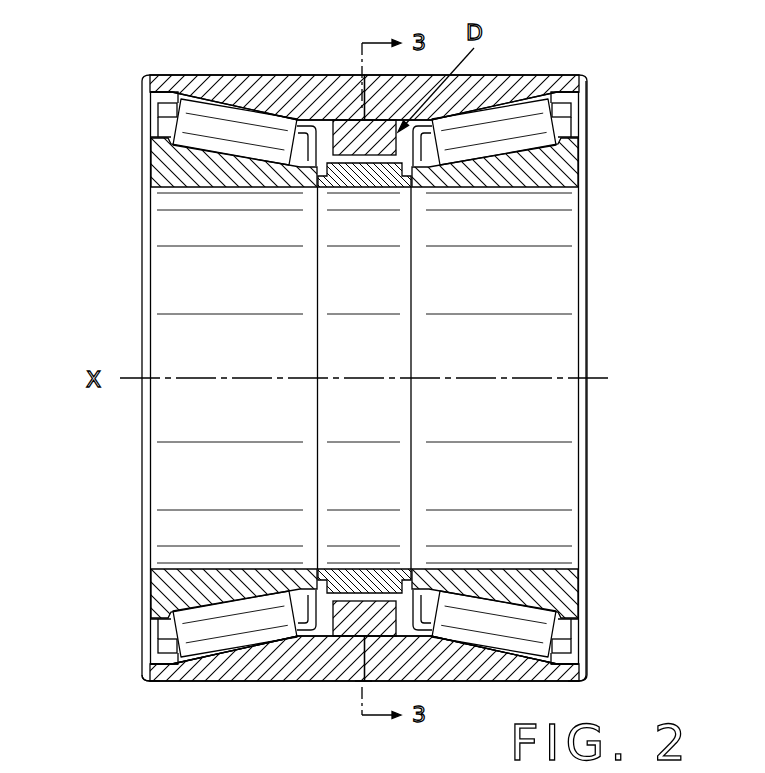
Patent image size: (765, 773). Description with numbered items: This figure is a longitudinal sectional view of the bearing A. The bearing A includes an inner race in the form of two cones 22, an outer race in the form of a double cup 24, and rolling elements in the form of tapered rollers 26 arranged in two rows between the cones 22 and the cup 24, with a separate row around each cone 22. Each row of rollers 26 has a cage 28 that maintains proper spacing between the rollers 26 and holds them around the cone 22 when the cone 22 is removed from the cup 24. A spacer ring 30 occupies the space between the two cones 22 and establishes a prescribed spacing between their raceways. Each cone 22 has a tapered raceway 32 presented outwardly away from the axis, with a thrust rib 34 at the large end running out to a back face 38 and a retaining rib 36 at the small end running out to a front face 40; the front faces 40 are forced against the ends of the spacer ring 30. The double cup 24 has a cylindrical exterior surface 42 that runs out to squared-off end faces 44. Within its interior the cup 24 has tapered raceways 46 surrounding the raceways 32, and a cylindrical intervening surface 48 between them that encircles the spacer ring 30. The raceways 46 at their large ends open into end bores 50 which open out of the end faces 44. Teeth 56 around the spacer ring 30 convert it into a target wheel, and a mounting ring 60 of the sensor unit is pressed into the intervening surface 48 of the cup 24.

The cones 22 is at (208, 180).
The double cup 24 is at (308, 88).
The tapered rollers 26 is at (239, 125).
The cage 28 is at (158, 105).
The spacer ring 30 is at (372, 183).
The mounting ring 60 is at (388, 152).
The tapered raceway 32 is at (245, 612).
The thrust rib 34 is at (152, 628).
The retaining rib 36 is at (305, 603).
The back face 38 is at (172, 590).
The front face 40 is at (356, 595).
The cylindrical exterior surface 42 is at (290, 686).
The end faces 44 is at (150, 683).
The tapered raceways 46 is at (220, 652).
The cylindrical intervening surface 48 is at (355, 603).
The end bores 50 is at (150, 660).
The teeth 56 is at (362, 653).
The bearing A is at (606, 298).